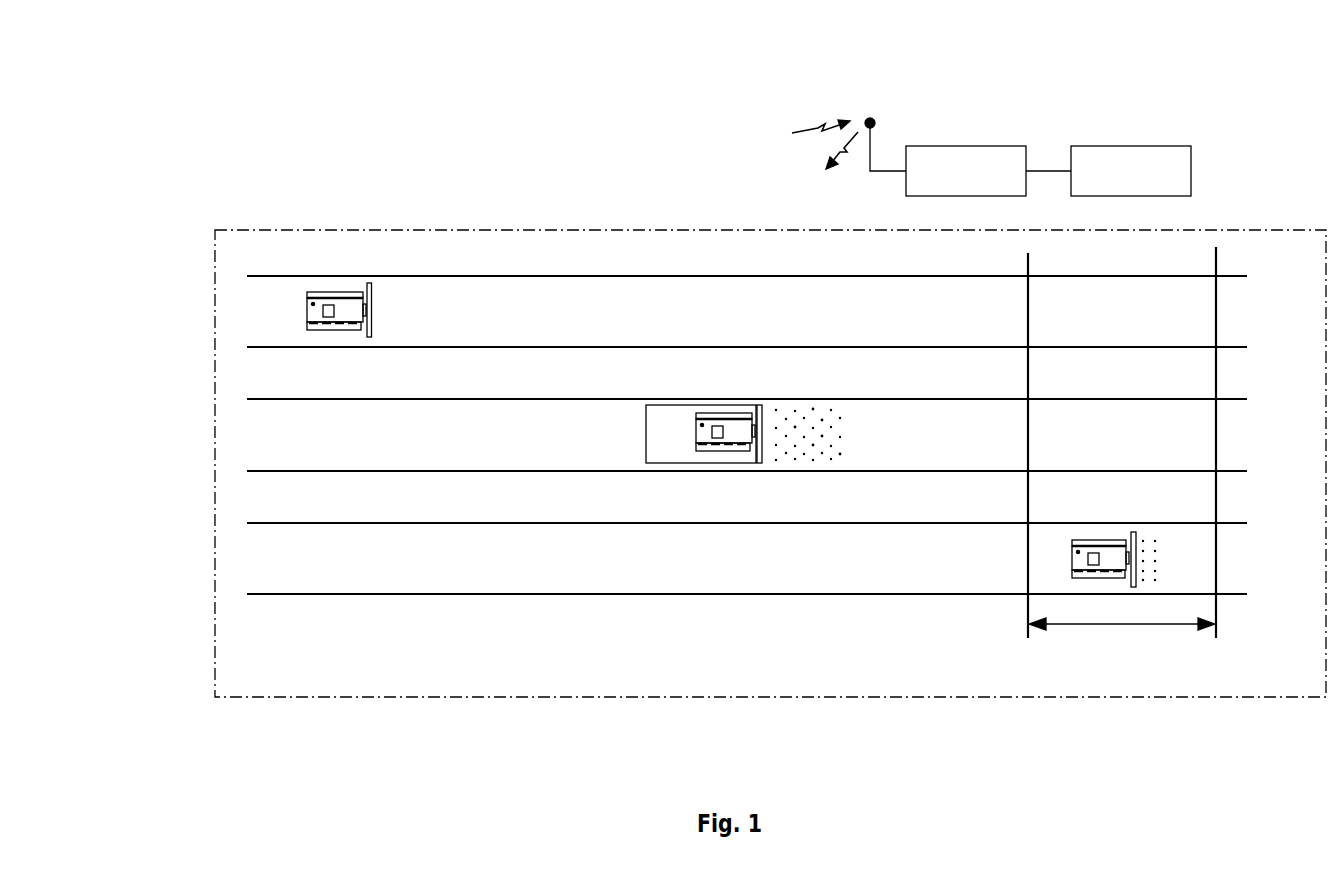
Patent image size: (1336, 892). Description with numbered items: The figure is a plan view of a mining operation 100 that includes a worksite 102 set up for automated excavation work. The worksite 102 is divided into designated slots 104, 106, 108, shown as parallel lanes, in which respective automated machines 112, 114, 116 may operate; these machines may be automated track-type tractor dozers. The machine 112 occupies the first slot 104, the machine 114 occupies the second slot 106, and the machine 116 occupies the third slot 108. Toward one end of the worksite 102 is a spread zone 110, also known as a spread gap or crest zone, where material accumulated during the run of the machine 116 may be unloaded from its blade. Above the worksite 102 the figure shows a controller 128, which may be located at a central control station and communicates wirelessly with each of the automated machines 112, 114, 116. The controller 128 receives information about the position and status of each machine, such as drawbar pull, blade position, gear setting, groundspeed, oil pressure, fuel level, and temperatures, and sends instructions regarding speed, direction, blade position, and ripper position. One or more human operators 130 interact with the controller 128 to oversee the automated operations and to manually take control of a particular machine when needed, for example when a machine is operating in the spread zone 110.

The mining operation 100 is at (750, 41).
The worksite 102 is at (448, 230).
The slot 104 is at (272, 275).
The slot 106 is at (272, 397).
The slot 108 is at (265, 522).
The spread zone 110 is at (1116, 627).
The automated machine 112 is at (332, 292).
The automated machine 114 is at (713, 415).
The automated machine 116 is at (1083, 540).
The controller 128 is at (963, 138).
The human operator 130 is at (1120, 143).